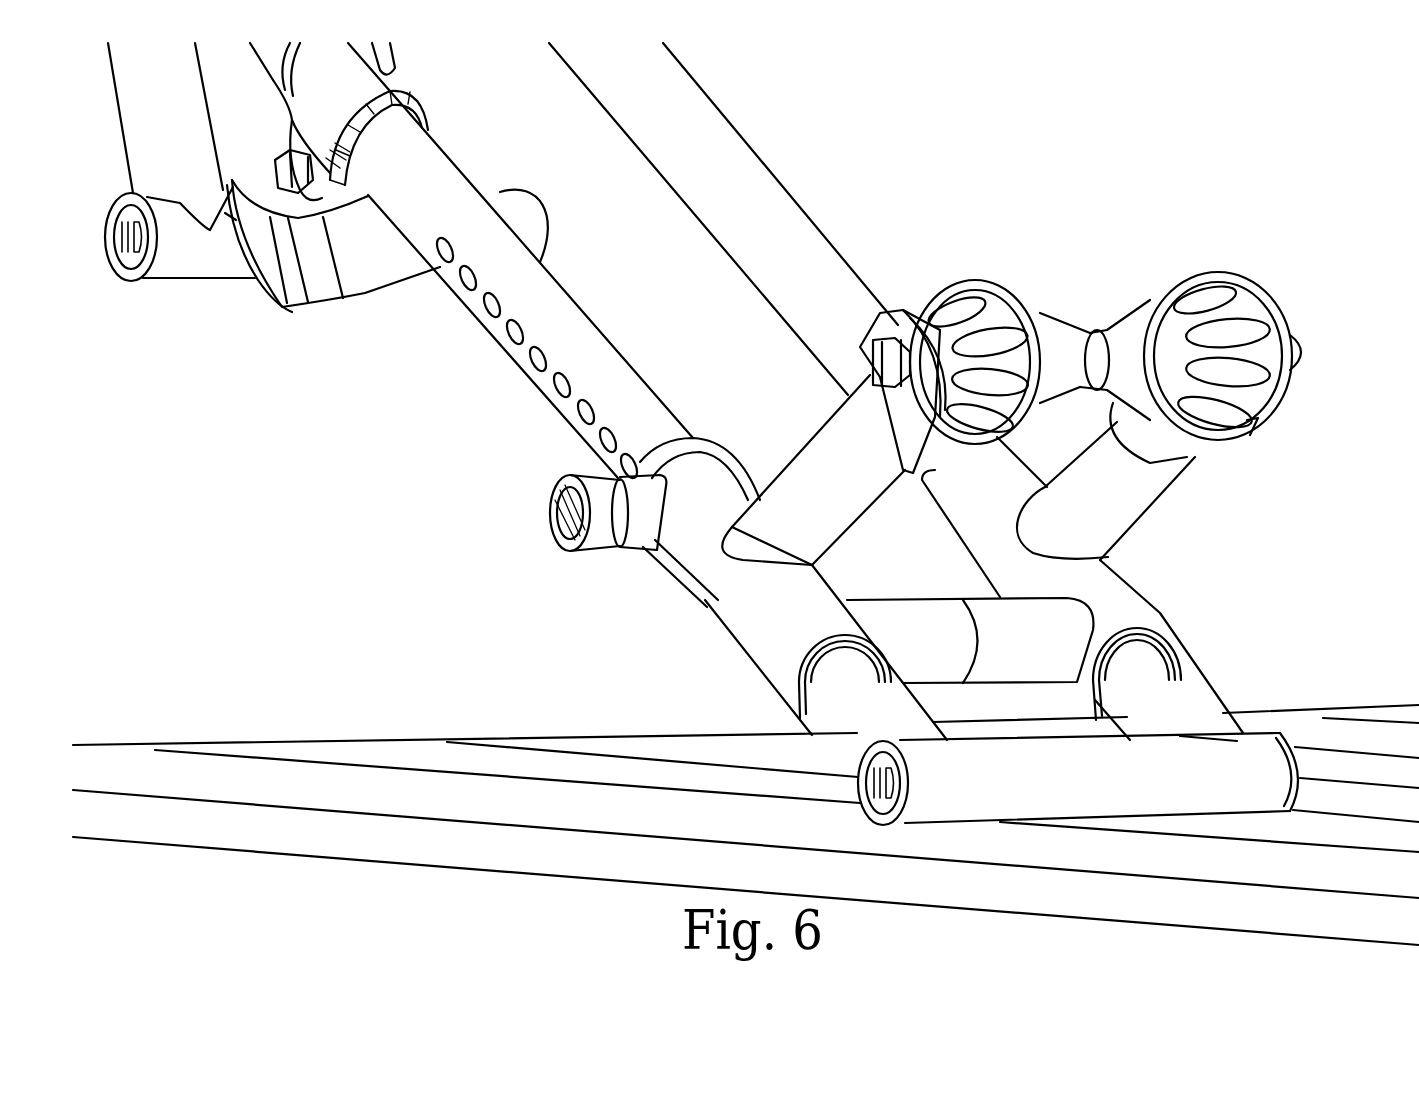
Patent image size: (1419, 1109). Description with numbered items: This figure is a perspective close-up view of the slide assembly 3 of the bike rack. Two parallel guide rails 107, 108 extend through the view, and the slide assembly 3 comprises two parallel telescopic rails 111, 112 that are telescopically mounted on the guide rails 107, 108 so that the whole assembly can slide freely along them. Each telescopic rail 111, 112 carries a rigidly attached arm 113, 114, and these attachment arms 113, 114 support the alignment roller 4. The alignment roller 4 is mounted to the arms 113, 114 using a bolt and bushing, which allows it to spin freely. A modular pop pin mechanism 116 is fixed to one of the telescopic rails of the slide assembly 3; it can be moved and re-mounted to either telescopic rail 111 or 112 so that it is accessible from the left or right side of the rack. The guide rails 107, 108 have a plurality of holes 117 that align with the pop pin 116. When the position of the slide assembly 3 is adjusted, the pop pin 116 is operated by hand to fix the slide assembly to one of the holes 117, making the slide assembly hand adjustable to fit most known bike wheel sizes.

The slide assembly 3 is at (772, 400).
The alignment roller 4 is at (1133, 313).
The guide rail 107 is at (562, 293).
The guide rail 108 is at (820, 252).
The telescopic rail 111 is at (770, 637).
The telescopic rail 112 is at (1127, 600).
The attachment arm 113 is at (1147, 493).
The attachment arm 114 is at (825, 505).
The pop pin mechanism 116 is at (635, 530).
The holes 117 is at (515, 334).